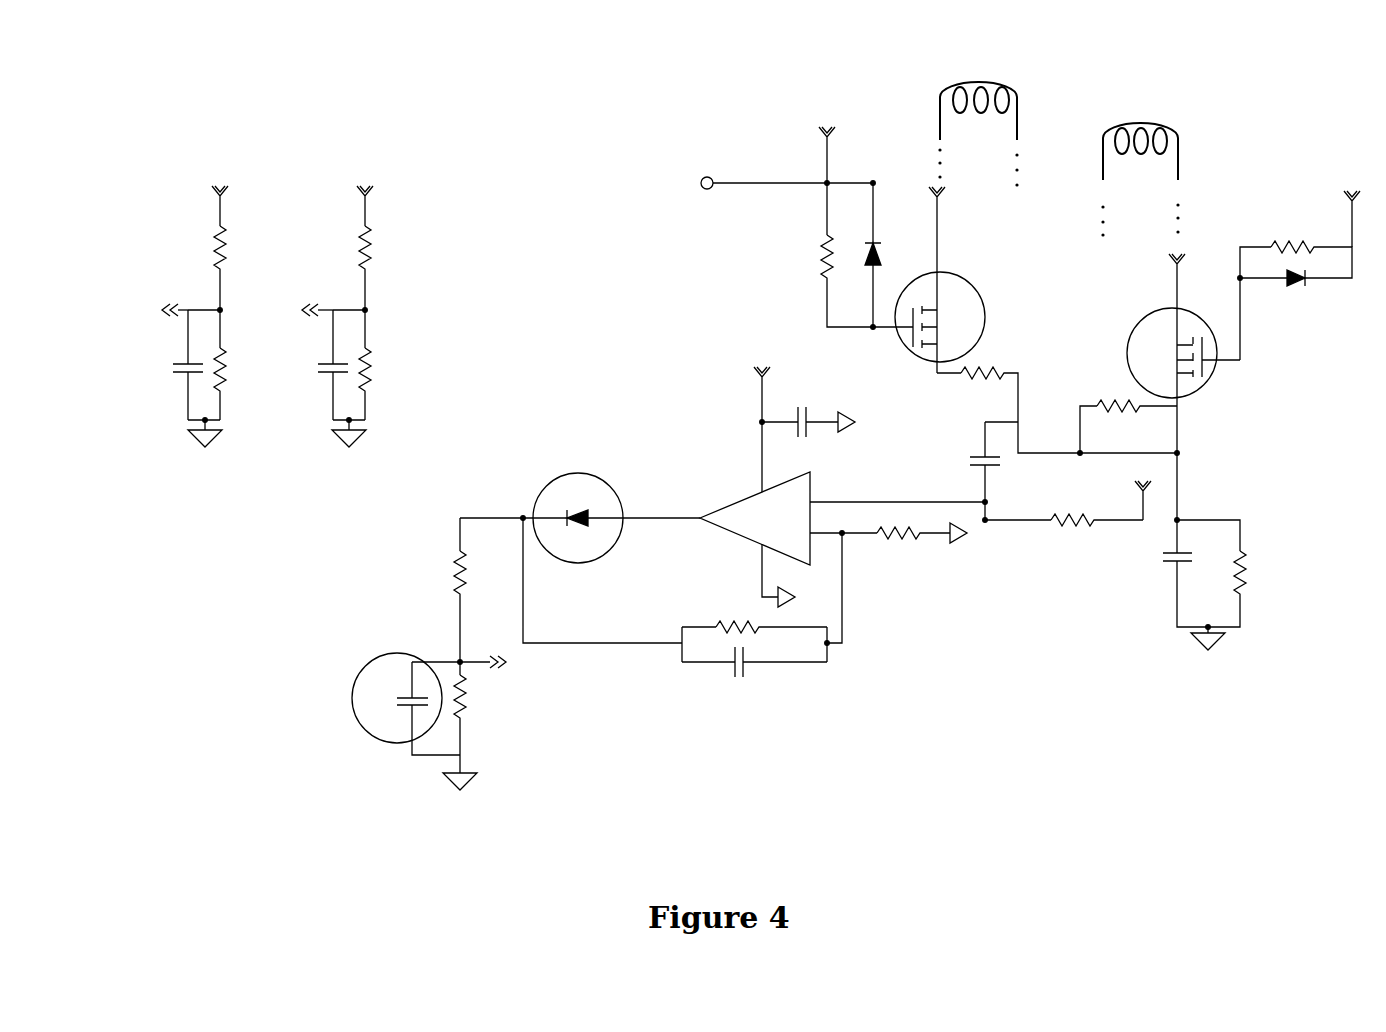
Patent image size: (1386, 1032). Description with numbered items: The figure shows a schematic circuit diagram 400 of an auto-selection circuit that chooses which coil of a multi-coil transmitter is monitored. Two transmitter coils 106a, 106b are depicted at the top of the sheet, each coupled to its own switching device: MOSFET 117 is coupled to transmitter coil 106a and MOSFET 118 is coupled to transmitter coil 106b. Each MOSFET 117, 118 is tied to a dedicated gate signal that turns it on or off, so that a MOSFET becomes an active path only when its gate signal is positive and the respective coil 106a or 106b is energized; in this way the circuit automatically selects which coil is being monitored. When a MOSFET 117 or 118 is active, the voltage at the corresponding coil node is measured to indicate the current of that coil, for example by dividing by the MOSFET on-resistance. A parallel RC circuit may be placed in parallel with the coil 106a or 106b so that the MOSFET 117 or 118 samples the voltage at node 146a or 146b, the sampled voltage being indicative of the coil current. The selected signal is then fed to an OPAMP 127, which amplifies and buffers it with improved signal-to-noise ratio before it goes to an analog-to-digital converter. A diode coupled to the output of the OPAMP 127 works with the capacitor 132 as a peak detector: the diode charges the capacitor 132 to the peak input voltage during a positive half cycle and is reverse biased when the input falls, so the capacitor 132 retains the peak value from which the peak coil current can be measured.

The schematic circuit diagram 400 is at (513, 68).
The transmitter coil 106a is at (978, 119).
The transmitter coil 106b is at (1140, 166).
The node 146a is at (952, 208).
The node 146b is at (1150, 255).
The MOSFET 117 is at (950, 270).
The MOSFET 118 is at (1155, 327).
The OPAMP 127 is at (868, 612).
The capacitor C229 132 is at (348, 662).